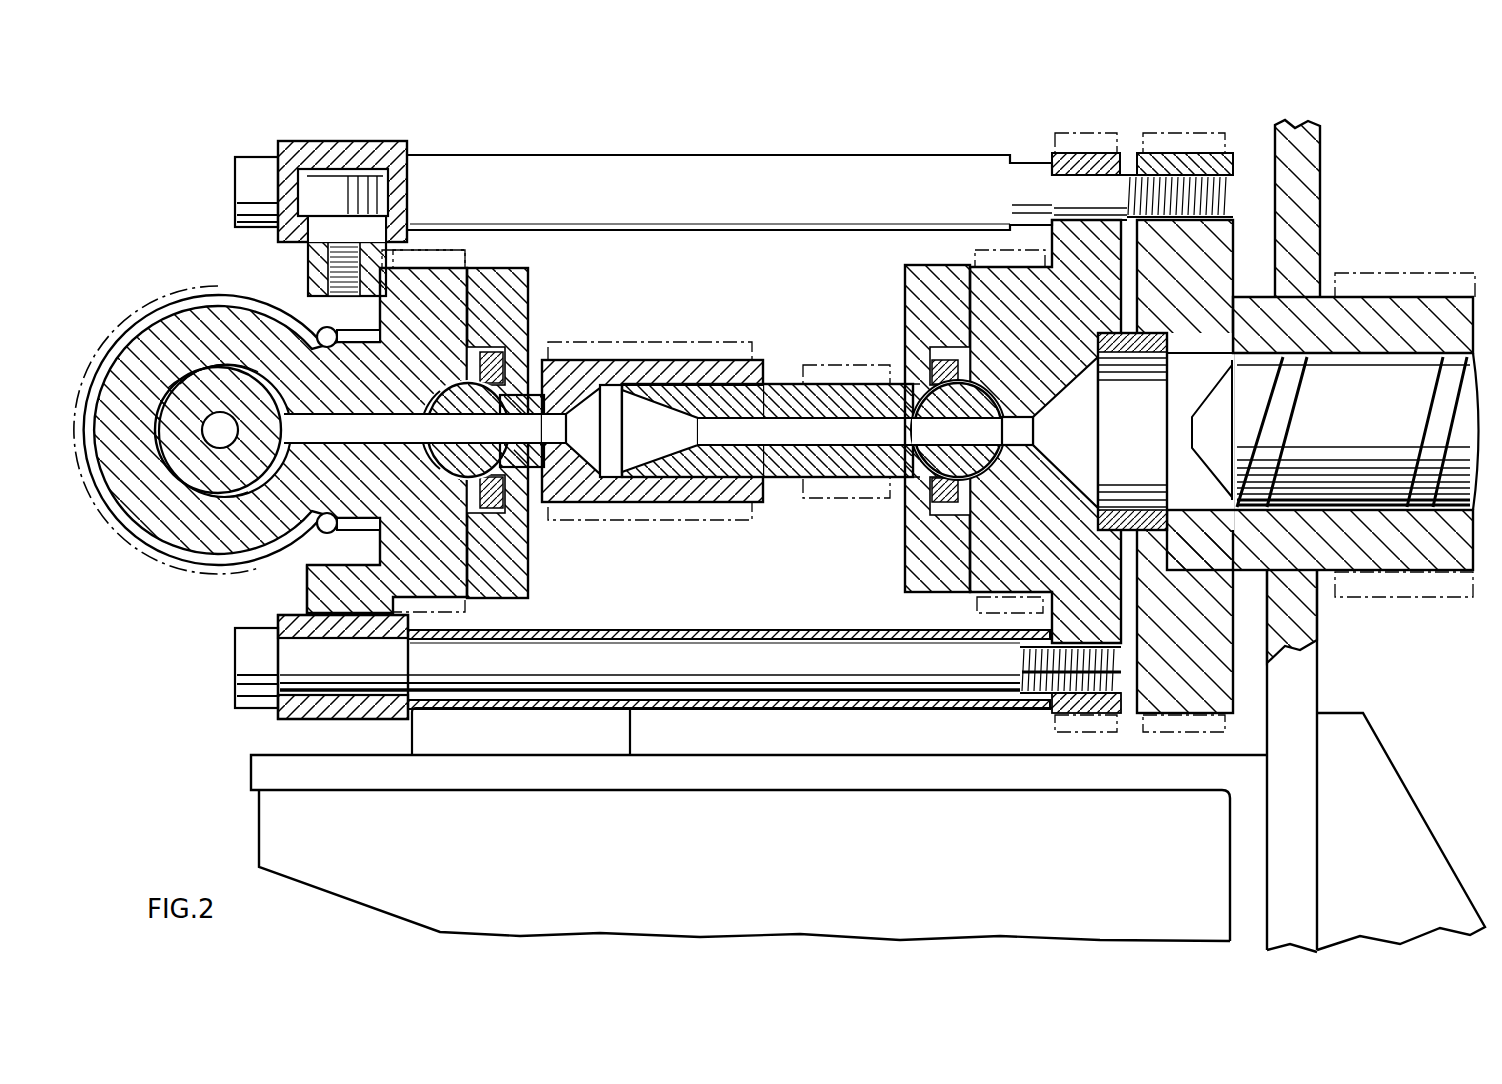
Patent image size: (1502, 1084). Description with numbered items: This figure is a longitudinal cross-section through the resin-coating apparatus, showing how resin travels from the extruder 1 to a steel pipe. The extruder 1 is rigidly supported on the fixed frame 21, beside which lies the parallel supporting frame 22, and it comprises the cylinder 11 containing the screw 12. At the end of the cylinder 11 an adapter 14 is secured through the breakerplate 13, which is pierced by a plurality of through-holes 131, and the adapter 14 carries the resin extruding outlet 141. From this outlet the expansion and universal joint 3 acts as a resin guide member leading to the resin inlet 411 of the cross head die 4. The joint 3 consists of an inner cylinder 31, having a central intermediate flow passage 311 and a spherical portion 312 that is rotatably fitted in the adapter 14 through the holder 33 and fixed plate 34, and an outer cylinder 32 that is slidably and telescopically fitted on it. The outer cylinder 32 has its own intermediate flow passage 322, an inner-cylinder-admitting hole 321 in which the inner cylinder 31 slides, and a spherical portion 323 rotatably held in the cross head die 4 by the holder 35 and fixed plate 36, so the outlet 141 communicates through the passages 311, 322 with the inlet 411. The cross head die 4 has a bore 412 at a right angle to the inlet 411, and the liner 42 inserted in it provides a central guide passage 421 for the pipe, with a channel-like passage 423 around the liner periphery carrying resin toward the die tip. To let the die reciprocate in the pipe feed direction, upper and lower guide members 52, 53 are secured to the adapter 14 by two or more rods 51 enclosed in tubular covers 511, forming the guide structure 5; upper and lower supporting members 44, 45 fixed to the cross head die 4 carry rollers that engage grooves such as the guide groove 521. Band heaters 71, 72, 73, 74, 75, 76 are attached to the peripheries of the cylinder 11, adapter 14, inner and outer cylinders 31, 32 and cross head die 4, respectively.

The extruder 1 is at (1348, 290).
The cylinder 11 is at (1392, 300).
The screw 12 is at (1310, 485).
The breakerplate 13 is at (1160, 398).
The through-holes 131 is at (1106, 392).
The adapter 14 is at (985, 283).
The resin extruding outlet 141 is at (1036, 430).
The fixed frame 21 is at (1315, 652).
The supporting frame 22 is at (250, 775).
The expansion and universal joint 3 is at (760, 352).
The inner cylinder 31 is at (786, 385).
The intermediate flow passage 311 is at (862, 420).
The spherical portion 312 is at (995, 470).
The outer cylinder 32 is at (688, 360).
The inner-cylinder-admitting hole 321 is at (612, 480).
The intermediate flow passage 322 is at (442, 455).
The spherical portion 323 is at (460, 482).
The holder 33 is at (930, 370).
The fixed plate 34 is at (905, 285).
The holder 35 is at (513, 365).
The fixed plate 36 is at (530, 285).
The cross head die 4 is at (146, 326).
The resin inlet 411 is at (347, 425).
The bore 412 is at (166, 390).
The liner 42 is at (158, 455).
The guide passage 421 is at (212, 448).
The channel-like passage 423 is at (244, 368).
The upper supporting member 44 is at (312, 268).
The lower supporting member 45 is at (307, 598).
The upper tie rod tube 5 is at (430, 150).
The rods 51 is at (712, 648).
The tubular covers 511 is at (677, 165).
The upper guide member 52 is at (297, 150).
The guide groove 521 is at (372, 190).
The lower guide member 53 is at (283, 712).
The band heater 71 is at (1368, 598).
The band heater 72 is at (975, 605).
The band heater 73 is at (830, 500).
The band heater 74 is at (700, 522).
The band heater 75 is at (468, 257).
The band heater 76 is at (108, 536).